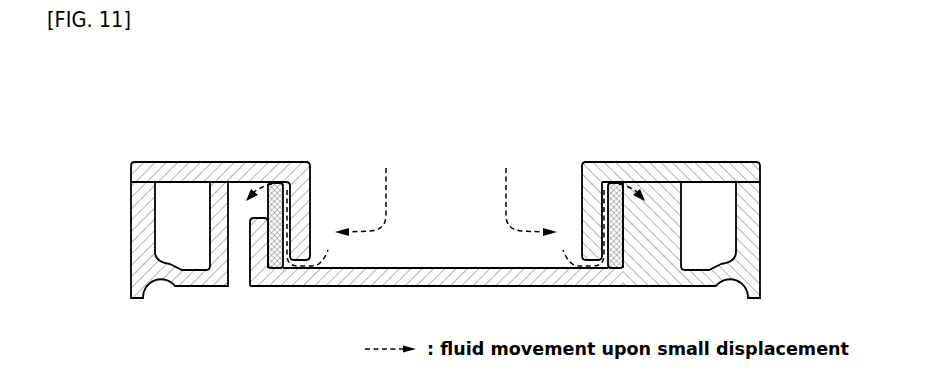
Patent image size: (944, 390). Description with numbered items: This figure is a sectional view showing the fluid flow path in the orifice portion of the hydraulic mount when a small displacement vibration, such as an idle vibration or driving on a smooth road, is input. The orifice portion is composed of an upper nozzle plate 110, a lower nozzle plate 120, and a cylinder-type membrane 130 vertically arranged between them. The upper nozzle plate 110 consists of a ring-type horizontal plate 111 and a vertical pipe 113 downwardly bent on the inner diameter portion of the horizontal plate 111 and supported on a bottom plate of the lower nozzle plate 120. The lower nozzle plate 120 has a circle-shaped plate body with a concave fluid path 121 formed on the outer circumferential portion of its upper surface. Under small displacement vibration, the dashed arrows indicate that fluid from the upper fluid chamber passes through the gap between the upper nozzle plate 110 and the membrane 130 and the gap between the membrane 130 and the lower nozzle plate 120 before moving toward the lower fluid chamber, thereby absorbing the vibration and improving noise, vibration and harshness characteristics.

The upper nozzle plate 110 is at (597, 162).
The horizontal plate 111 is at (668, 168).
The vertical pipe 113 is at (587, 207).
The lower nozzle plate 120 is at (336, 287).
The fluid path 121 is at (178, 227).
The membrane 130 is at (278, 183).